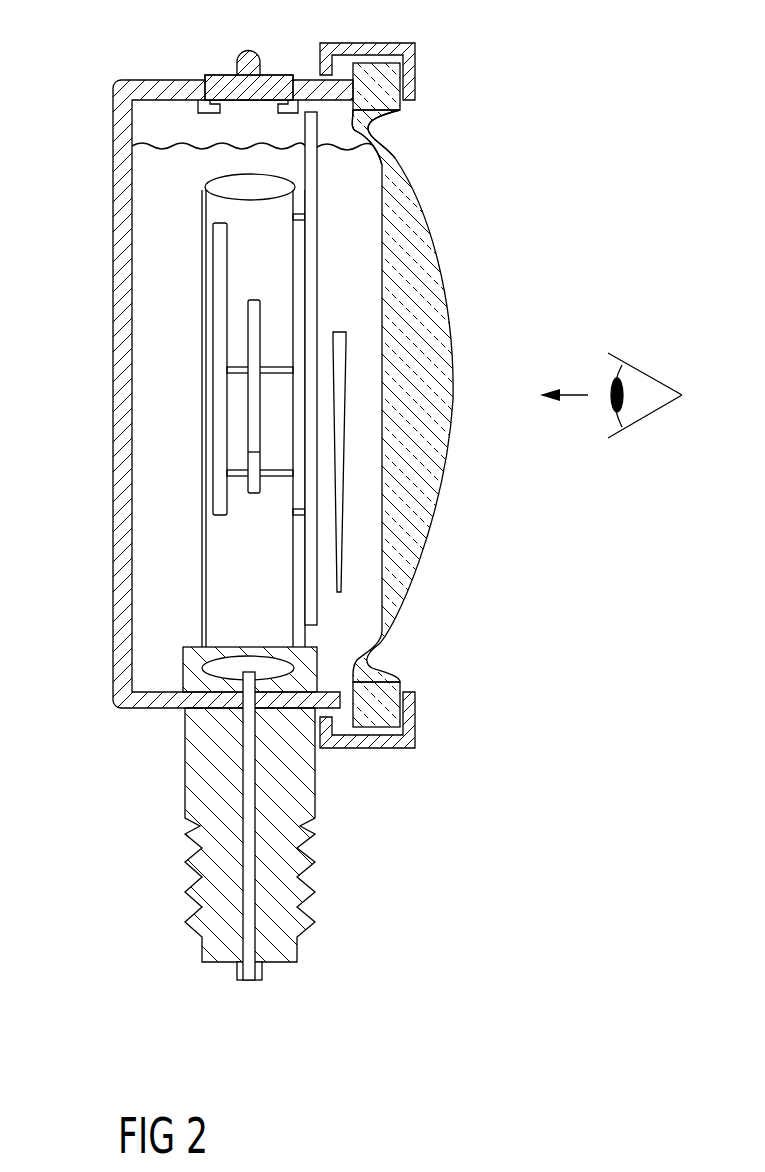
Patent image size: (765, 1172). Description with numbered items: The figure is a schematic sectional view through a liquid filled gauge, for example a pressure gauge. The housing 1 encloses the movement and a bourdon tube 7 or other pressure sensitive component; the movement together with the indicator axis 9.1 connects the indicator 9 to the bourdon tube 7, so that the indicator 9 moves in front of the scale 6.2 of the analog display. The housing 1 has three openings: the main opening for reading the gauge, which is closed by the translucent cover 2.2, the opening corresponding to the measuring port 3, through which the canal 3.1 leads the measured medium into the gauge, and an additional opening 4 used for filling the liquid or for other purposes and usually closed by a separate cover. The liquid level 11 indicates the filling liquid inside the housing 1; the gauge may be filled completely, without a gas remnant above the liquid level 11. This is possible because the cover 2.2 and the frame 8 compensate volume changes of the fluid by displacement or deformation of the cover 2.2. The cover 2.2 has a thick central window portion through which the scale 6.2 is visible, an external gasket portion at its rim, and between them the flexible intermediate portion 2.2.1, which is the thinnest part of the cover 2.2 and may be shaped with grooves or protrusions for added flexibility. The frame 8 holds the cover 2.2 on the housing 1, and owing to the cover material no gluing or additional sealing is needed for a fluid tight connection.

The housing 1 is at (123, 284).
The cover 2.2 is at (436, 232).
The flexible intermediate portion 2.2.1 is at (360, 129).
The measuring port 3 is at (240, 996).
The canal 3.1 is at (247, 885).
The additional opening 4 is at (219, 76).
The scale 6.2 is at (312, 174).
The bourdon tube 7 is at (225, 184).
The frame 8 is at (372, 748).
The indicator 9 is at (340, 480).
The indicator axis 9.1 is at (280, 366).
The liquid level 11 is at (160, 146).